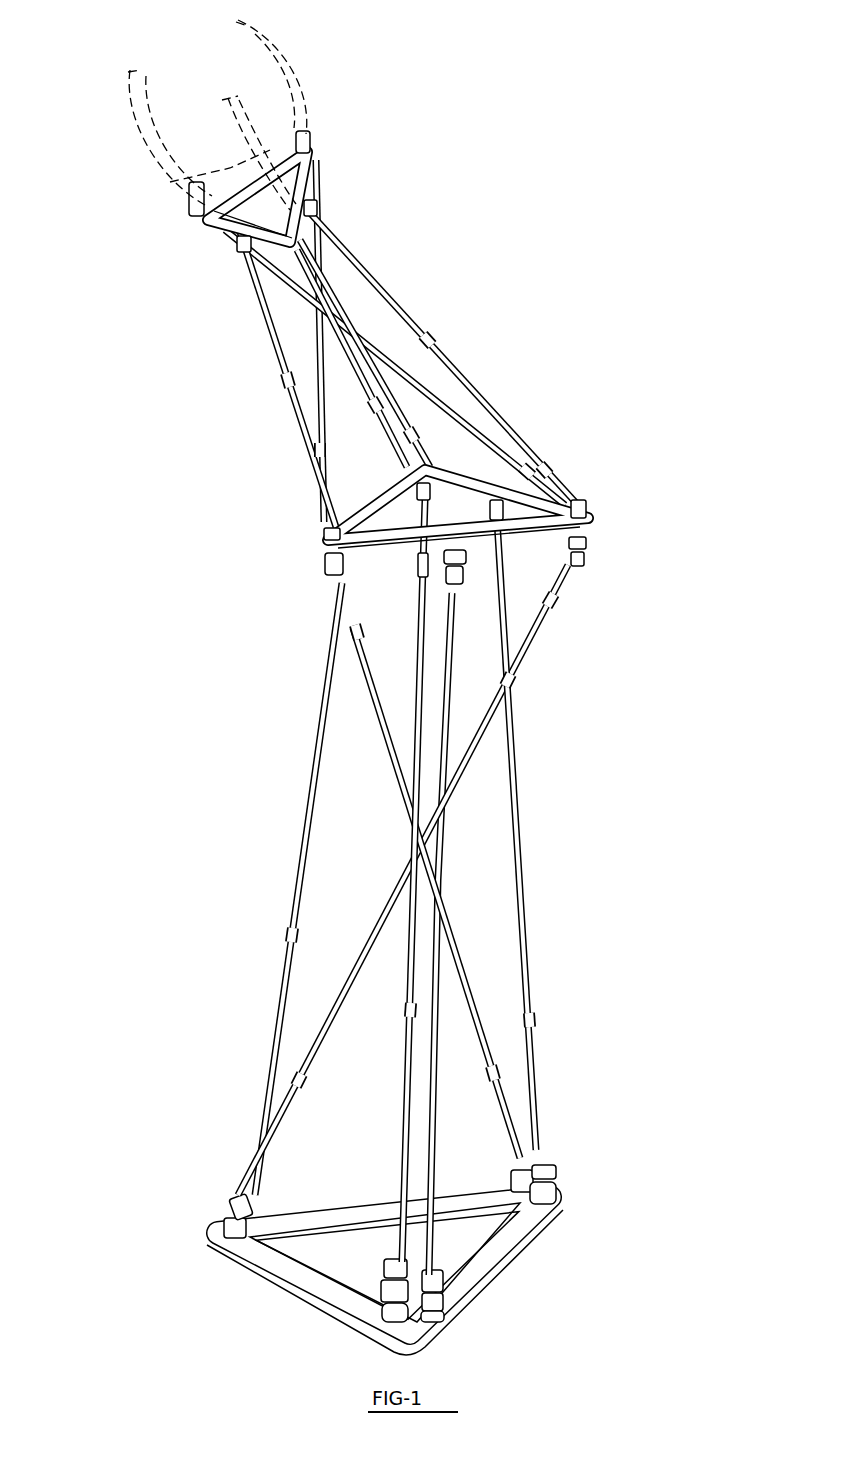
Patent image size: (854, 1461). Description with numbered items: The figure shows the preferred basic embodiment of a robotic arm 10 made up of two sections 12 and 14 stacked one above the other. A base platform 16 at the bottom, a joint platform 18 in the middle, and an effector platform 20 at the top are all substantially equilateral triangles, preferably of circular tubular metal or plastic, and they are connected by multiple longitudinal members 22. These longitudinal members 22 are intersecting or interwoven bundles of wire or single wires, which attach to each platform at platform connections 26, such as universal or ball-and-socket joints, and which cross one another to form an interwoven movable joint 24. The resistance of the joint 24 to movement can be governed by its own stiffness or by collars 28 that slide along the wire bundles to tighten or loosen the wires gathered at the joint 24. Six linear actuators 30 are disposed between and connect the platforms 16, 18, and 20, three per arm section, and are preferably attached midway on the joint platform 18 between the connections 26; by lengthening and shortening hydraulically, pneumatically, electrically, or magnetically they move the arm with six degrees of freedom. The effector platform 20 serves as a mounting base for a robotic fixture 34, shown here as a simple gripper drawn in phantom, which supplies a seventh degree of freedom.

The robotic arm 10 is at (502, 192).
The section 12 is at (497, 350).
The section 14 is at (387, 717).
The base platform 16 is at (510, 1240).
The joint platform 18 is at (527, 530).
The effector platform 20 is at (222, 228).
The longitudinal members 22 is at (343, 610).
The interwoven movable joint 24 is at (320, 315).
The platform connections 26 is at (586, 507).
The collars 28 is at (352, 640).
The actuators 30 is at (317, 320).
The robotic fixture 34 is at (335, 95).